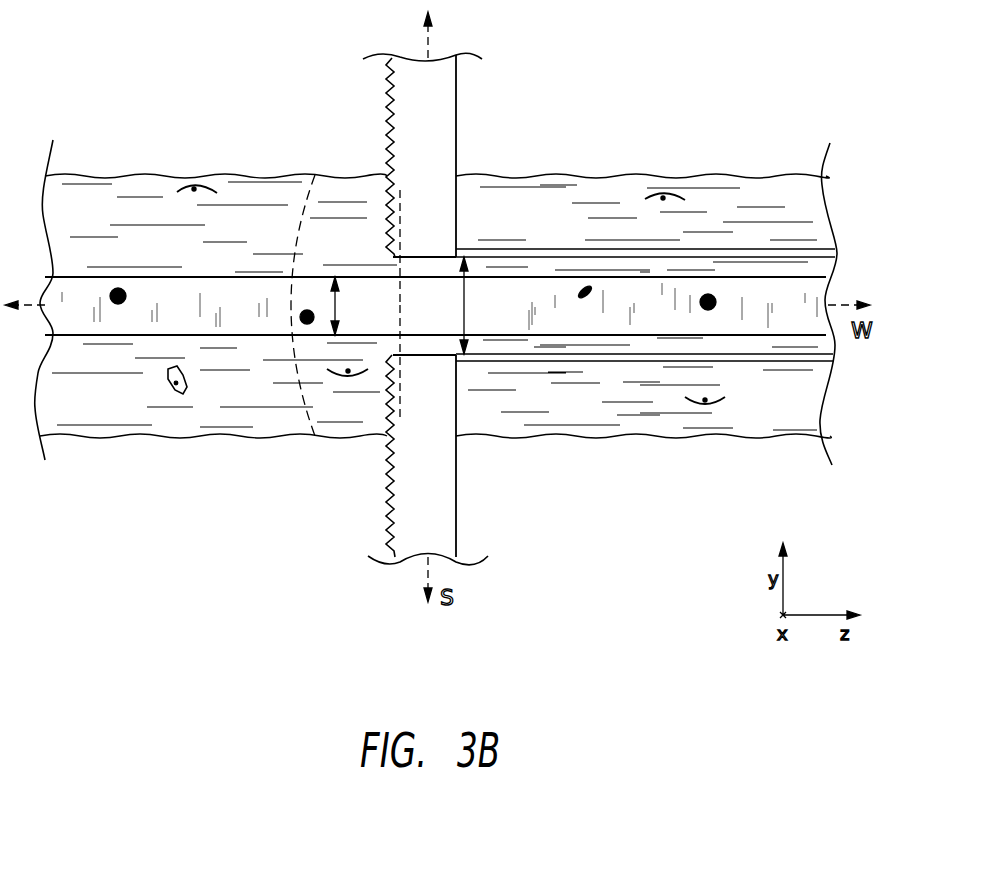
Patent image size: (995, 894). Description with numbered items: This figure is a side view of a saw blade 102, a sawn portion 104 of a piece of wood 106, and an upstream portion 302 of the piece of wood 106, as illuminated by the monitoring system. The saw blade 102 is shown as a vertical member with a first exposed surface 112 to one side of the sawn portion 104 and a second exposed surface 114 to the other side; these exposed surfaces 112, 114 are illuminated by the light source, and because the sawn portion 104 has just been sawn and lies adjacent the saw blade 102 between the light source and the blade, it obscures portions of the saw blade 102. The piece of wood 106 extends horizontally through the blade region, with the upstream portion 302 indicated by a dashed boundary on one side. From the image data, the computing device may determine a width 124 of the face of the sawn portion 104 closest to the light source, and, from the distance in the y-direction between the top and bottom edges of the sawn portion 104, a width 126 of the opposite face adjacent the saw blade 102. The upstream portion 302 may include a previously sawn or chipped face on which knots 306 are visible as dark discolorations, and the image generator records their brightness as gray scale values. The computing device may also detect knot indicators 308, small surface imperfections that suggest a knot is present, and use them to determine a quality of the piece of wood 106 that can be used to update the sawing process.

The saw blade 102 is at (457, 98).
The sawn portion 104 is at (838, 267).
The piece of wood 106 is at (736, 138).
The first exposed surface 112 is at (400, 206).
The second exposed surface 114 is at (400, 405).
The width of the face 124 is at (335, 305).
The width of an opposite face 126 is at (464, 305).
The upstream portion 302 is at (297, 222).
The knots 306 is at (128, 297).
The knot indicators 308 is at (154, 392).